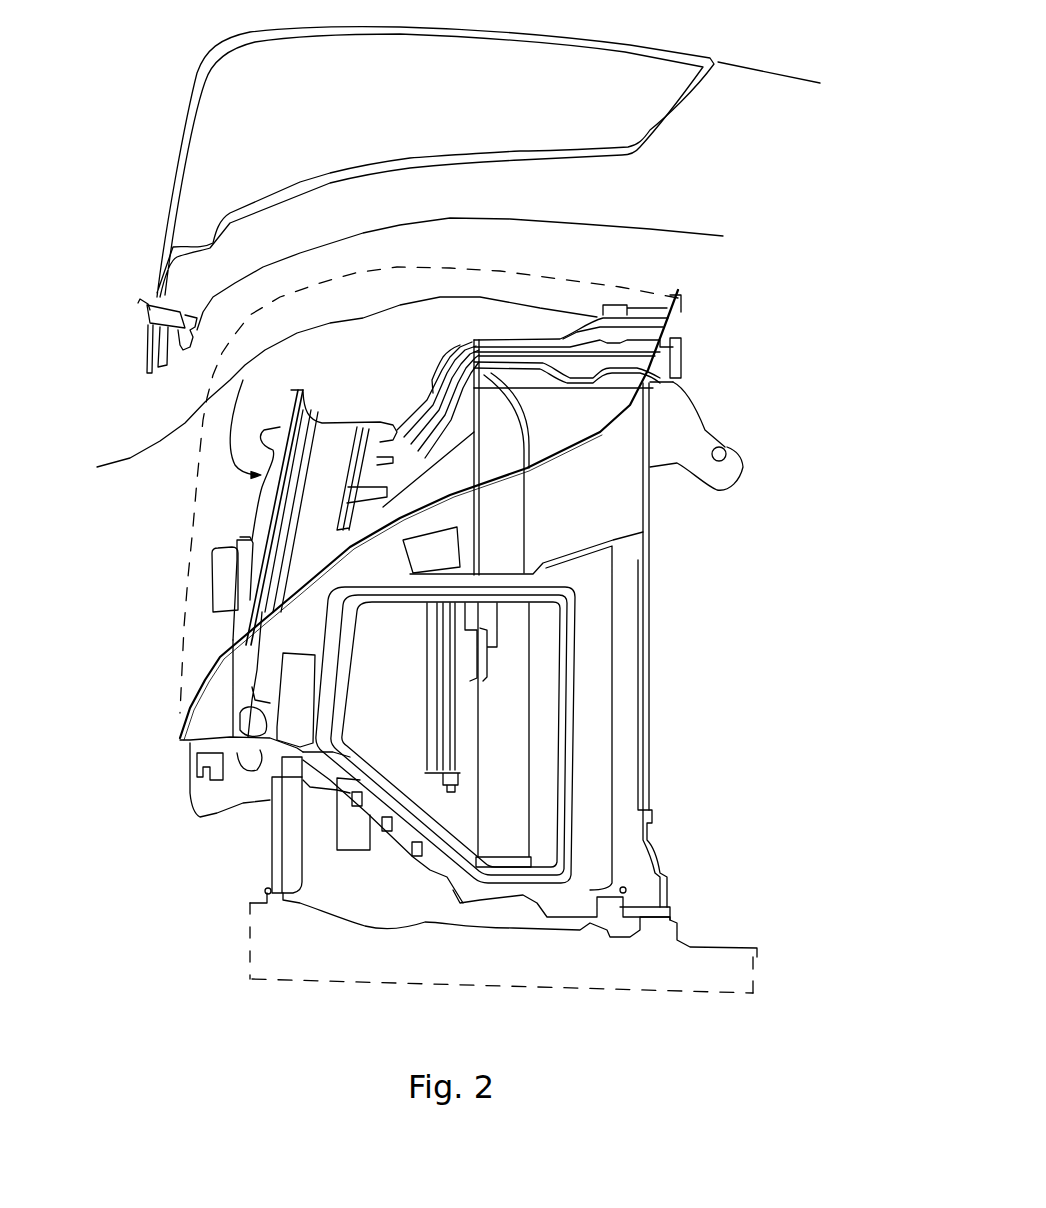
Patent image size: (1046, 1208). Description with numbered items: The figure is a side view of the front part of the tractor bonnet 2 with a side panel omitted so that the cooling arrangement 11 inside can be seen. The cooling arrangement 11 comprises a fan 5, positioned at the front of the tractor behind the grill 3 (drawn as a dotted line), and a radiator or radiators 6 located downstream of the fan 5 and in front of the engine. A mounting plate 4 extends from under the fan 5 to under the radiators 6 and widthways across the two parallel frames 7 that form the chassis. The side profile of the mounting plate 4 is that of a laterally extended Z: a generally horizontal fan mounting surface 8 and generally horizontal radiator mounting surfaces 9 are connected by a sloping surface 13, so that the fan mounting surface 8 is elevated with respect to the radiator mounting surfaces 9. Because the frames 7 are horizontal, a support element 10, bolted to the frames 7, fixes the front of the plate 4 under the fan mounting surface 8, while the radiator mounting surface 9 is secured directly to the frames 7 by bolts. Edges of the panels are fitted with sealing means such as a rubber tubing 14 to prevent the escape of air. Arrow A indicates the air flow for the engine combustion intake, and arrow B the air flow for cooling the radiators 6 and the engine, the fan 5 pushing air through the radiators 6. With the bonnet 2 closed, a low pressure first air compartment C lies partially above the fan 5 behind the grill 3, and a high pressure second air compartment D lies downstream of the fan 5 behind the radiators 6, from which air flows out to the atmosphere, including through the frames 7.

The bonnet 2 is at (746, 100).
The grill 3 is at (233, 107).
The mounting plate 4 is at (487, 887).
The fan 5 is at (313, 423).
The radiators 6 is at (510, 753).
The frames 7 is at (357, 963).
The fan mounting surface 8 is at (263, 737).
The radiator mounting surfaces 9 is at (505, 890).
The support element 10 is at (280, 850).
The cooling arrangement 11 is at (670, 287).
The sloping surface 13 is at (393, 827).
The rubber tubing 14 is at (575, 660).
The arrow A is at (337, 388).
The arrow B is at (743, 810).
The first air compartment C is at (390, 312).
The second air compartment D is at (787, 808).